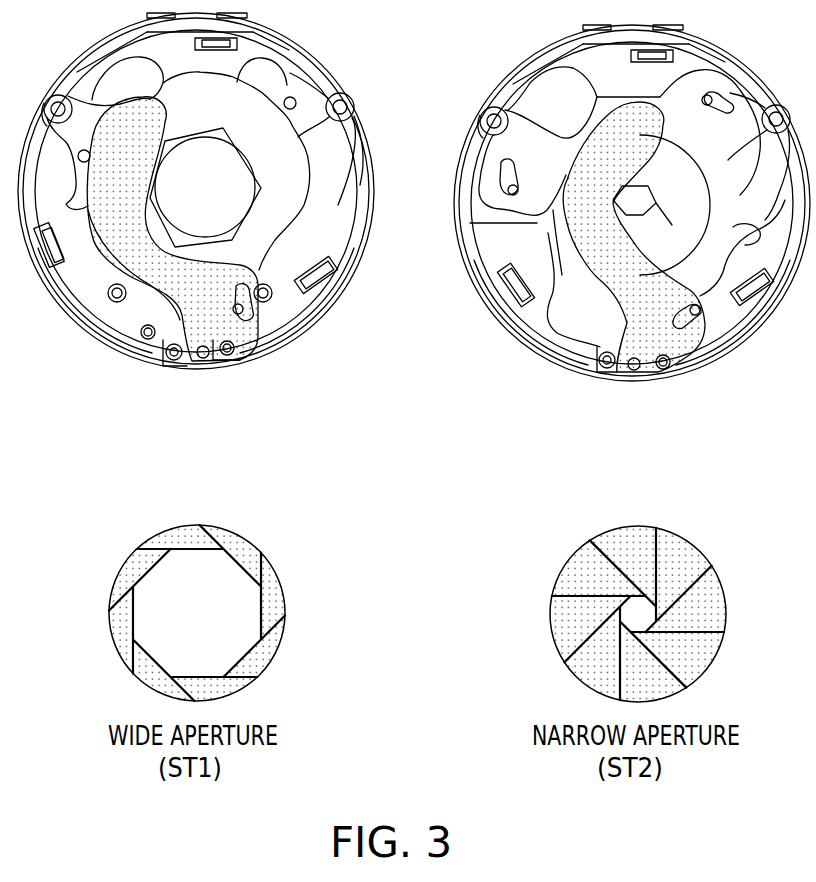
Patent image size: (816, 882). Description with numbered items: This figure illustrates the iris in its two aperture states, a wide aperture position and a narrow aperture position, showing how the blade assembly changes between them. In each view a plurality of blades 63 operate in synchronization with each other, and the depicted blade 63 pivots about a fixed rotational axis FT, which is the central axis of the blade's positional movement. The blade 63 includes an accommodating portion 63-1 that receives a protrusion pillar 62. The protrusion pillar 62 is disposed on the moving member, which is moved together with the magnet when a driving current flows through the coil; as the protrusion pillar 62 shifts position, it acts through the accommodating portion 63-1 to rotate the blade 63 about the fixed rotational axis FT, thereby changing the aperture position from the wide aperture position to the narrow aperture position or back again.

The blade 63 is at (120, 252).
The accommodating portion of the blade 63-1 is at (242, 302).
The protrusion pillar 62 is at (245, 307).
The fixed rotational axis FT is at (203, 358).